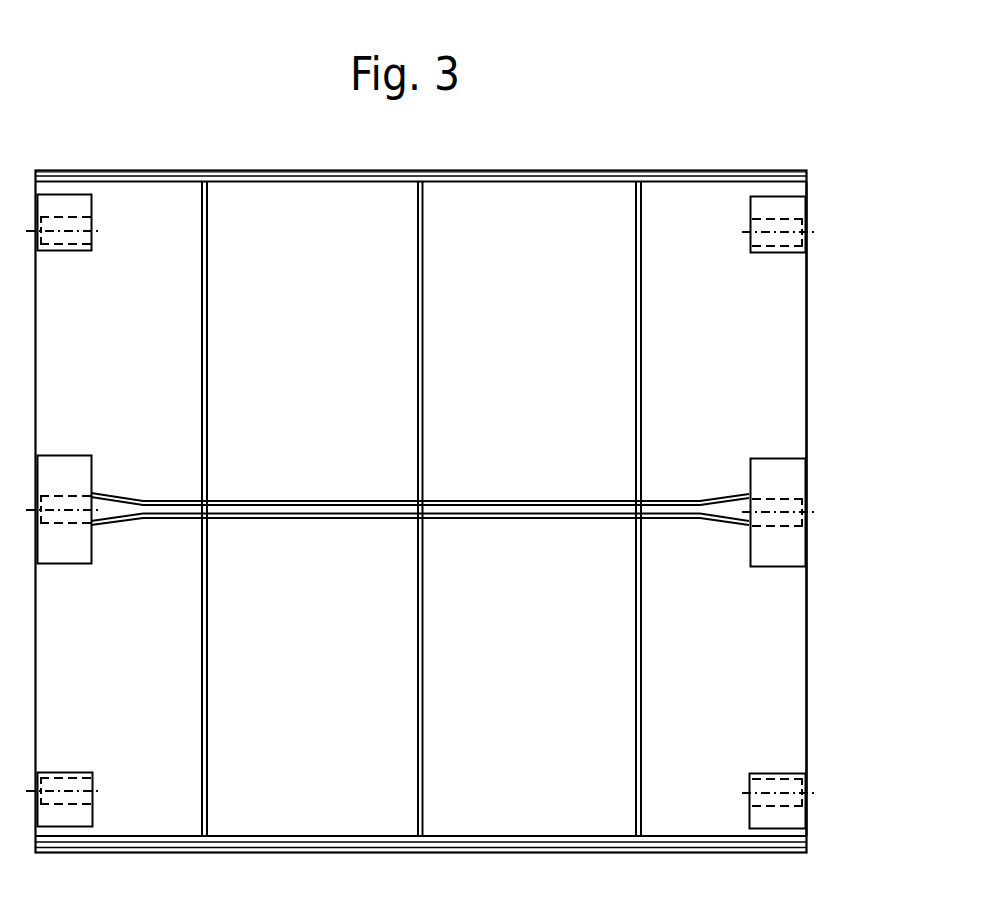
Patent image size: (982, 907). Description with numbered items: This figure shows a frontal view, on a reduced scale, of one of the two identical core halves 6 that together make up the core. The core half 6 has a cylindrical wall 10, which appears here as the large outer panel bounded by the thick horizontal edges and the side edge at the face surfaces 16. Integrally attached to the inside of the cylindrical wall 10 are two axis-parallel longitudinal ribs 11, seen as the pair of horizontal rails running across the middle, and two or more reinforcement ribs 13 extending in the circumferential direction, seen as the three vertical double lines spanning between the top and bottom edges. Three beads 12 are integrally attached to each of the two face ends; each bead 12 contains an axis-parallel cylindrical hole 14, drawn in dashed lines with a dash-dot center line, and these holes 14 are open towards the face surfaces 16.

The core half 6 is at (566, 150).
The cylindrical wall 10 is at (784, 391).
The longitudinal ribs 11 is at (310, 518).
The beads 12 is at (50, 545).
The reinforcement ribs 13 is at (420, 370).
The cylindrical holes 14 is at (790, 228).
The face surfaces 16 is at (810, 658).